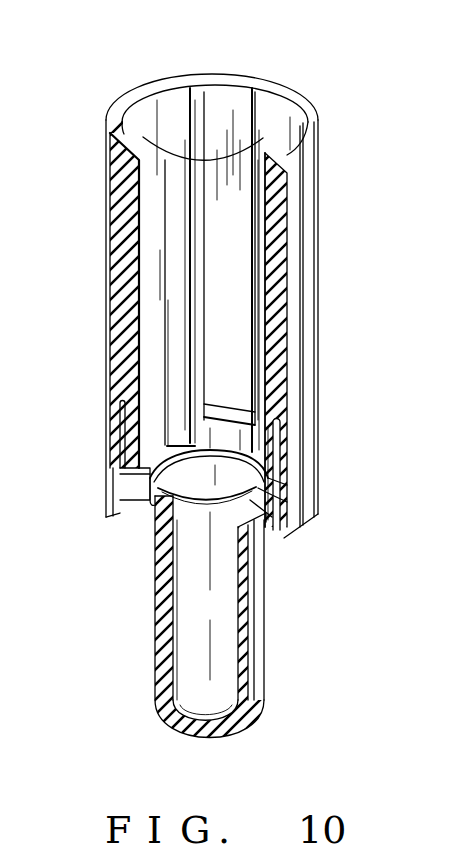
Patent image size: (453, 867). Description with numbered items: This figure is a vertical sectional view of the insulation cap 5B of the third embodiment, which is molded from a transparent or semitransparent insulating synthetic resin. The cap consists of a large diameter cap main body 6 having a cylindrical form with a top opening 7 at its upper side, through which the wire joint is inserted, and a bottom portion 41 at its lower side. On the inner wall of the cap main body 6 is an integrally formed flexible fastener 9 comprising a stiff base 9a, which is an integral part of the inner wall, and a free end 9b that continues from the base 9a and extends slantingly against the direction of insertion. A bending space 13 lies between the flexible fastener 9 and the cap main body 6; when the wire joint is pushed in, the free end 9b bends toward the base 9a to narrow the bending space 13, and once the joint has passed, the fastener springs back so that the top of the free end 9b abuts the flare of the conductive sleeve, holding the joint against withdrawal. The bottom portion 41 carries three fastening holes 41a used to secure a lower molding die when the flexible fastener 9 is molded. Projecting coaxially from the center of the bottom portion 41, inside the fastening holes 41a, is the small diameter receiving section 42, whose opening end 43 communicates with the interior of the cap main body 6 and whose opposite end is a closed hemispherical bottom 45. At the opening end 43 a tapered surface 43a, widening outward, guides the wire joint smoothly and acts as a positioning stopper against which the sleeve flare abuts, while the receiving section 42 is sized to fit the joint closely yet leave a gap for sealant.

The insulation cap 5B is at (320, 220).
The cap main body 6 is at (107, 217).
The top opening 7 is at (236, 115).
The flexible fastener 9 is at (130, 448).
The base 9a is at (282, 432).
The free end 9b is at (290, 478).
The bending space 13 is at (121, 410).
The bottom portion 41 is at (306, 530).
The fastening holes 41a is at (128, 505).
The receiving section 42 is at (157, 655).
The opening end 43 is at (172, 418).
The tapered surface 43a is at (160, 545).
The hemispherical bottom 45 is at (195, 742).